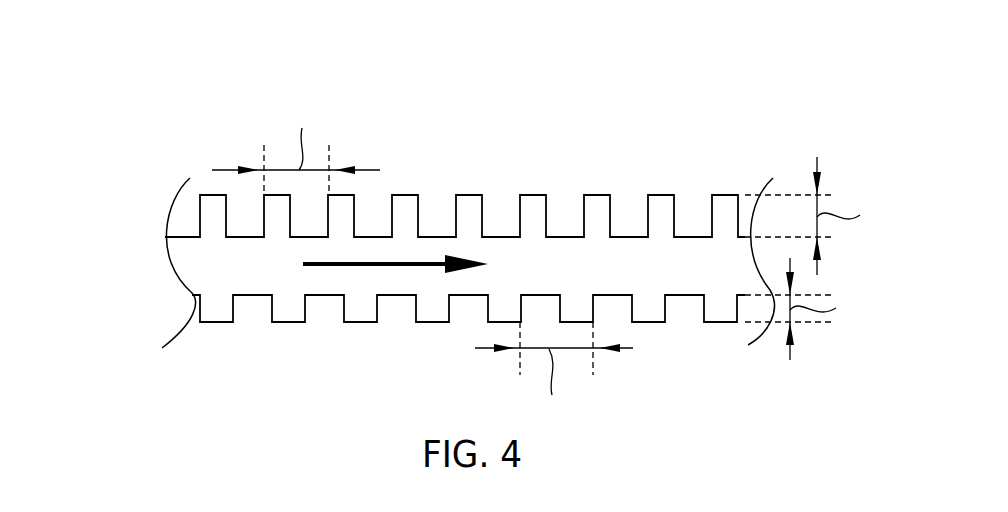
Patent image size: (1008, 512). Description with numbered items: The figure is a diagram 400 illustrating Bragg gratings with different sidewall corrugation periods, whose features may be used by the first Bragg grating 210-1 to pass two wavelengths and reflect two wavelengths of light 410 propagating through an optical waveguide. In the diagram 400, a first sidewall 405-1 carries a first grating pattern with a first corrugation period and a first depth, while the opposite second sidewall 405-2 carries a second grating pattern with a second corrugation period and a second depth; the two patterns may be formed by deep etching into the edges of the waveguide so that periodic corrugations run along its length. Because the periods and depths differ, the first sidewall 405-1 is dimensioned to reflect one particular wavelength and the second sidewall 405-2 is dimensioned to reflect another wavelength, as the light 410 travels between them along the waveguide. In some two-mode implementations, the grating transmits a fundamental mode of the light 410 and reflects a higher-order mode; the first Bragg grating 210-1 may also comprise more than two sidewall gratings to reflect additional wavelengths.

The diagram 400 is at (462, 234).
The first Bragg grating 210-1 is at (462, 265).
The first sidewall 405-1 is at (146, 212).
The second sidewall 405-2 is at (146, 310).
The light 410 is at (428, 262).